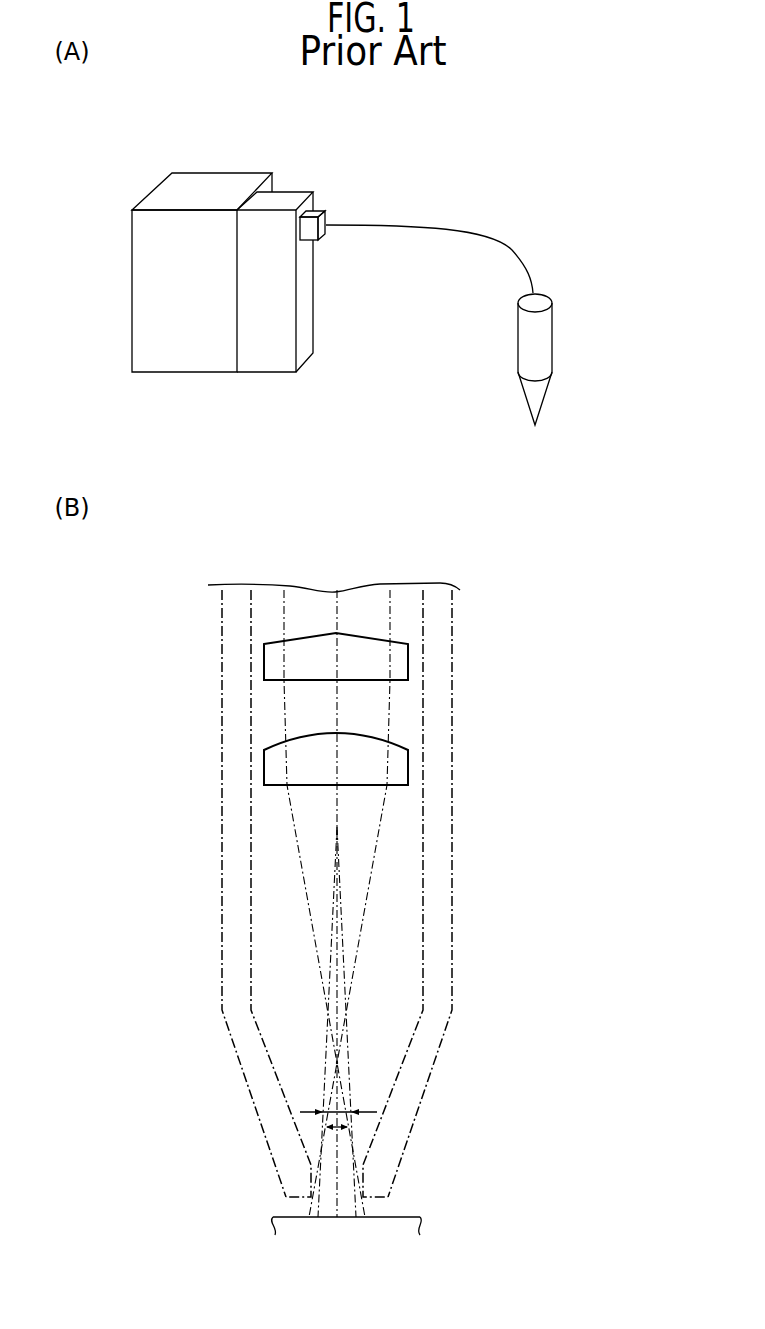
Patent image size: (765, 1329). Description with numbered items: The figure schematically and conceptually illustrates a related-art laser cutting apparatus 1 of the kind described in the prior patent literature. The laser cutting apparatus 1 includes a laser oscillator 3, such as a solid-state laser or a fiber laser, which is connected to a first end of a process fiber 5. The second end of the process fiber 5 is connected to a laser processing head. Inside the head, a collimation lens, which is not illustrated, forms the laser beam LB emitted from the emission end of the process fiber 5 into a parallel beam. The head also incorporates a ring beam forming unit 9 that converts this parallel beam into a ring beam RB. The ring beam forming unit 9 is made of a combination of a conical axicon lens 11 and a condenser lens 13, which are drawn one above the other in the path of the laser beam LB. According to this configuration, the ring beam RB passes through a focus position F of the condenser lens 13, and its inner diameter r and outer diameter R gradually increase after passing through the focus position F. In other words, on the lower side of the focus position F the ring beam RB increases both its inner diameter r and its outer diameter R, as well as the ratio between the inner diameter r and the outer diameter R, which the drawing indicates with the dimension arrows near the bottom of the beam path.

The laser cutting apparatus 1 is at (402, 155).
The laser oscillator 3 is at (222, 173).
The process fiber 5 is at (447, 228).
The ring beam forming unit 9 is at (210, 688).
The conical axicon lens 11 is at (408, 665).
The condenser lens 13 is at (408, 770).
The laser beam LB is at (387, 613).
The ring beam RB is at (325, 1138).
The focus position F is at (340, 1063).
The outer diameter R is at (378, 1112).
The inner diameter r is at (352, 1132).